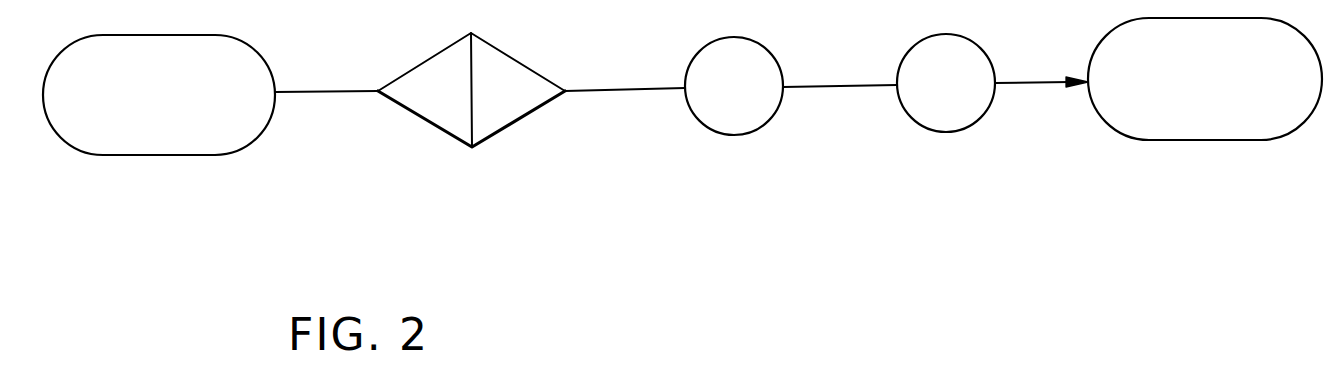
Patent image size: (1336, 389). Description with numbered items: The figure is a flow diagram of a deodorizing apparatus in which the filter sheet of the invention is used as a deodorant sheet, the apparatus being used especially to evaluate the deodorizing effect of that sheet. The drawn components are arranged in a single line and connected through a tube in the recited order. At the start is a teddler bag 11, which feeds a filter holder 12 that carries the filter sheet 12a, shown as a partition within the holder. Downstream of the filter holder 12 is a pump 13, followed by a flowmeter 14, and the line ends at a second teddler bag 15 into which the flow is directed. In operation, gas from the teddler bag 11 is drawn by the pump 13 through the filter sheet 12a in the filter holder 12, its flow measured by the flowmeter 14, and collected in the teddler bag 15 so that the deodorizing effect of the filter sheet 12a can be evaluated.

The teddler bag 11 is at (222, 147).
The filter holder 12 is at (512, 123).
The filter sheet 12a is at (468, 85).
The pump 13 is at (743, 135).
The flowmeter 14 is at (955, 133).
The teddler bag 15 is at (1270, 122).